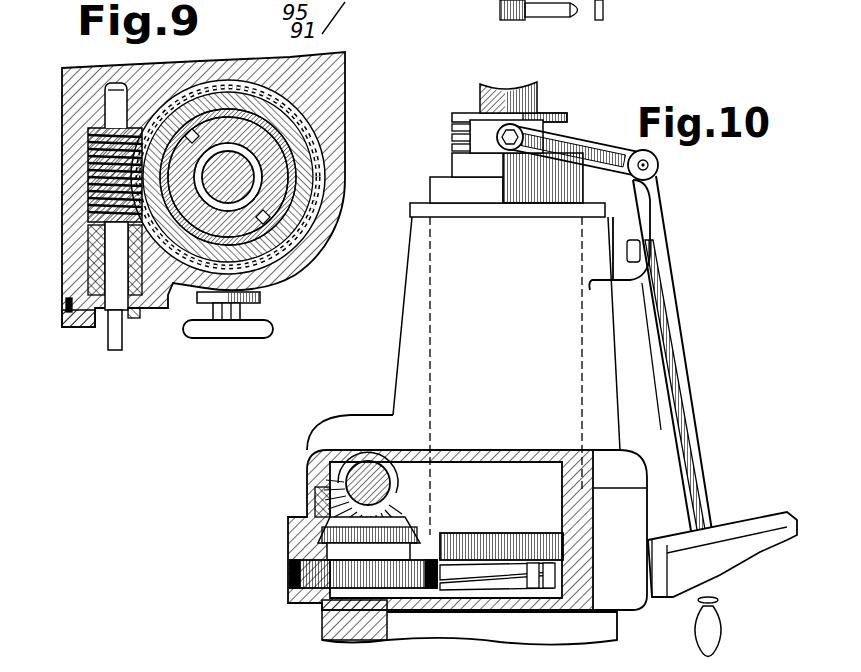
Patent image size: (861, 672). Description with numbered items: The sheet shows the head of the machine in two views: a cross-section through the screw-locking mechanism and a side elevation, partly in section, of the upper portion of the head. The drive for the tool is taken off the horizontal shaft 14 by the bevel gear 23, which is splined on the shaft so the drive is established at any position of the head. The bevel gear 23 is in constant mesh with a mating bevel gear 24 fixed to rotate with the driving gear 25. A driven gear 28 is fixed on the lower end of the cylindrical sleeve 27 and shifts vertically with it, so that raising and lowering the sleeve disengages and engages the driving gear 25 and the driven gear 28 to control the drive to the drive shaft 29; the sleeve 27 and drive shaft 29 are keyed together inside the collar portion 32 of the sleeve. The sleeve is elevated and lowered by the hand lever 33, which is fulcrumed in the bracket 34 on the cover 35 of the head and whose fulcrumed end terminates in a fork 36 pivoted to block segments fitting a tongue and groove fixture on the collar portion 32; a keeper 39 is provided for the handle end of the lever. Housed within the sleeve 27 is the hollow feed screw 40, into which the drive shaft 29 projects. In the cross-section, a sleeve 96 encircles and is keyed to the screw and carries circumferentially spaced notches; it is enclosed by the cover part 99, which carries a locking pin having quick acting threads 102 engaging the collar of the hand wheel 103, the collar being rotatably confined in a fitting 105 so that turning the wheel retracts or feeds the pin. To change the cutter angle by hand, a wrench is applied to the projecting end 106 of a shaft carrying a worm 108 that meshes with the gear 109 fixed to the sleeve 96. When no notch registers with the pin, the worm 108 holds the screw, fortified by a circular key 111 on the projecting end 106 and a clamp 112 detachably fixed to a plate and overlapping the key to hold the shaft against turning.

In FIG. 10, the horizontal shaft 14 is at (350, 480).
In FIG. 10, the bevel gear 23 is at (313, 497).
In FIG. 10, the mating bevel gear 24 is at (323, 525).
In FIG. 10, the driving gear 25 is at (337, 578).
In FIG. 10, the cylindrical sleeve 27 is at (447, 195).
In FIG. 10, the driven gear 28 is at (462, 540).
In FIG. 9, the drive shaft 29 is at (277, 128).
In FIG. 10, the drive shaft 29 is at (492, 103).
In FIG. 10, the collar portion 32 is at (453, 135).
In FIG. 10, the hand lever 33 is at (682, 343).
In FIG. 10, the bracket 34 is at (645, 222).
In FIG. 10, the cover 35 is at (598, 327).
In FIG. 10, the fork 36 is at (568, 135).
In FIG. 10, the keeper 39 is at (733, 537).
In FIG. 9, the hollow feed screw 40 is at (297, 140).
In FIG. 10, the hollow feed screw 40 is at (483, 573).
In FIG. 9, the sleeve 96 is at (310, 105).
In FIG. 9, the cover part 99 is at (323, 240).
In FIG. 9, the quick acting threads 102 is at (113, 260).
In FIG. 9, the hand wheel 103 is at (270, 329).
In FIG. 9, the fitting 105 is at (260, 298).
In FIG. 9, the projecting end 106 is at (114, 343).
In FIG. 9, the worm 108 is at (88, 174).
In FIG. 9, the gear 109 is at (312, 268).
In FIG. 9, the circular key 111 is at (137, 318).
In FIG. 9, the clamp 112 is at (85, 328).